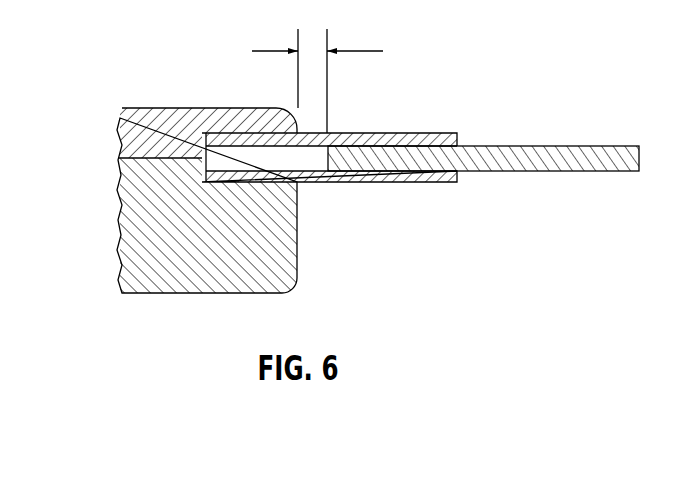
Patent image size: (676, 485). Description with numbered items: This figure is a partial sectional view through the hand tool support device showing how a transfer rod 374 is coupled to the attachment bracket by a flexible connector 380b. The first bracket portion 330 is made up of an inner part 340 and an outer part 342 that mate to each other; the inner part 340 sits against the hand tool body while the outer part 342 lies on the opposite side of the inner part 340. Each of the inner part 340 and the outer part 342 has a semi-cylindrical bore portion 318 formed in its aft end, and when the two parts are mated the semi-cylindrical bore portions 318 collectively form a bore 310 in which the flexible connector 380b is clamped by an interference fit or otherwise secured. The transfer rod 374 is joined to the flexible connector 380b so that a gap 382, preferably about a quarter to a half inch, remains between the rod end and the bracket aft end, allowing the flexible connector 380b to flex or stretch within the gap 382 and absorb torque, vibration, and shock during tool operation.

The bore 310 is at (300, 185).
The semi-cylindrical bore portion 318 is at (245, 130).
The first bracket portion 330 is at (105, 108).
The inner part 340 is at (182, 277).
The outer part 342 is at (160, 117).
The transfer rod 374 is at (544, 145).
The flexible connector 380b is at (422, 133).
The gap 382 is at (365, 50).